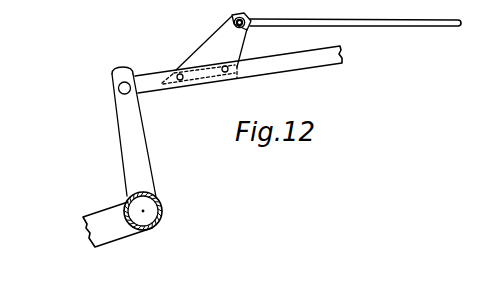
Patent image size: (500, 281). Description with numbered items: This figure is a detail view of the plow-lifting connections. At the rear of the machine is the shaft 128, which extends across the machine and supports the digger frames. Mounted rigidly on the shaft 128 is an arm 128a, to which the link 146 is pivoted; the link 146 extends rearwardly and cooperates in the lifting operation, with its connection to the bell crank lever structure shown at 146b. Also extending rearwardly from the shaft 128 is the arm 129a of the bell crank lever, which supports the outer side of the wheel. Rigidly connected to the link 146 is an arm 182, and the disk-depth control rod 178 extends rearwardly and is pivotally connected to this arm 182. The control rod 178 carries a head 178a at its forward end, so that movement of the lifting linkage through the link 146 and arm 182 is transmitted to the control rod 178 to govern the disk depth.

The disk-depth control rod 178 is at (380, 25).
The head 178a is at (232, 20).
The arm 182 is at (205, 50).
The link 146 is at (272, 68).
The pivot connection 146b is at (125, 88).
The arm 128a is at (135, 128).
The shaft 128 is at (163, 223).
The arm 129a is at (107, 218).